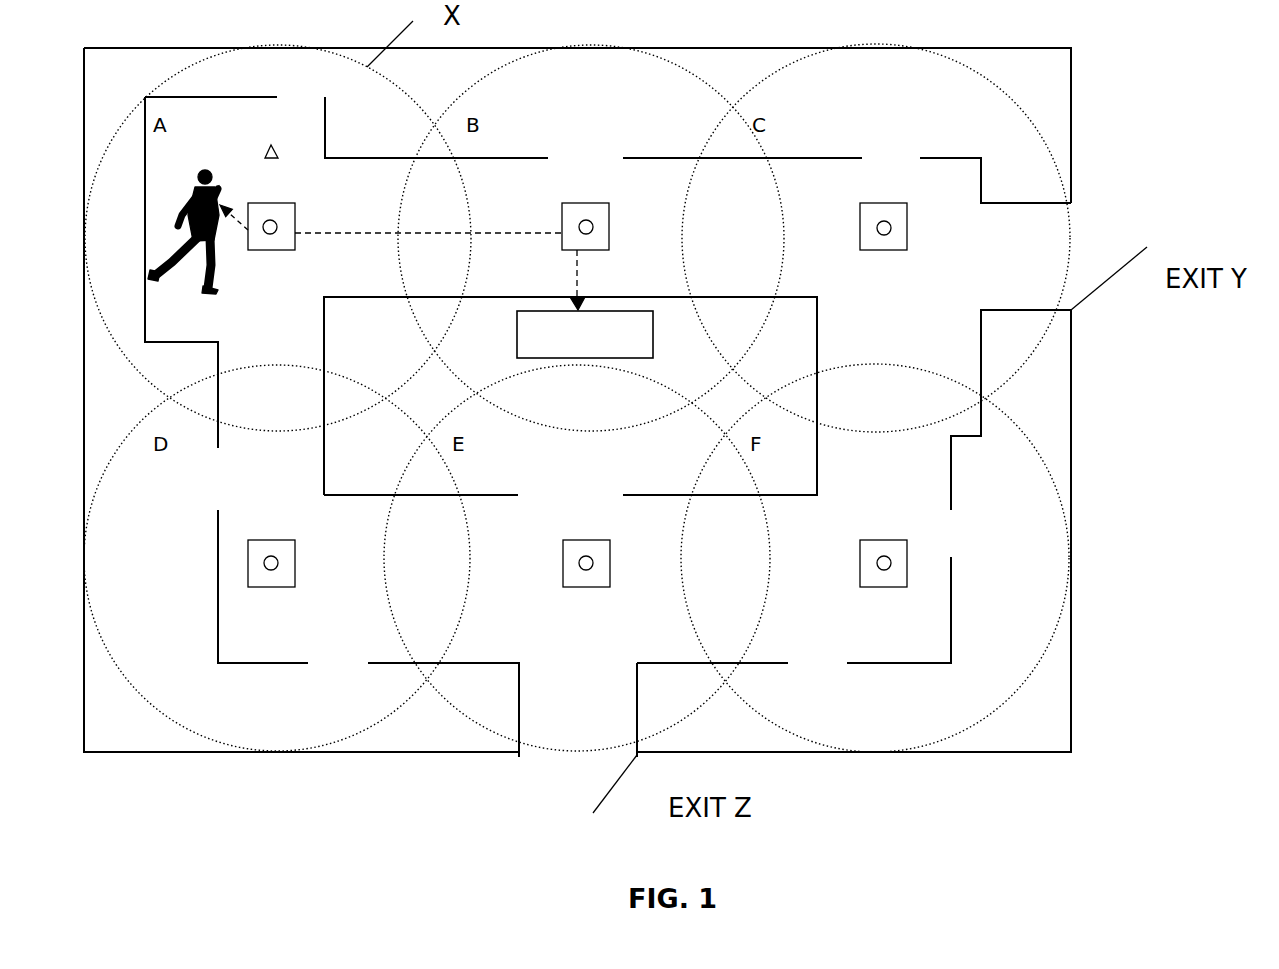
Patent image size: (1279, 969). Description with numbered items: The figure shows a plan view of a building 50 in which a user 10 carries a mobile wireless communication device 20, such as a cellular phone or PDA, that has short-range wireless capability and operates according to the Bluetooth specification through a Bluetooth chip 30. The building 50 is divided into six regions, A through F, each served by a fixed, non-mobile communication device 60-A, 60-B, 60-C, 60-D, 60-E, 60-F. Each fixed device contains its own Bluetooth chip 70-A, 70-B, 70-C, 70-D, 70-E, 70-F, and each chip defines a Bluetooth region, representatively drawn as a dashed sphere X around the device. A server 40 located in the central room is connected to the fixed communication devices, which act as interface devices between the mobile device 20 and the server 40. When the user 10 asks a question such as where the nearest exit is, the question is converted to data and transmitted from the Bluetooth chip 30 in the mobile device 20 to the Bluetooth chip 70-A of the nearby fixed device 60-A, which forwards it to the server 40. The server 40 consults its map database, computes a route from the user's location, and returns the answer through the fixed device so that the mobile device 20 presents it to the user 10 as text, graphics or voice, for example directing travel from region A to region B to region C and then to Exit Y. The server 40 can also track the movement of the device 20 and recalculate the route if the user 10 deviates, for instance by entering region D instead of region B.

The user 10 is at (183, 216).
The mobile wireless communication device 20 is at (173, 173).
The Bluetooth chip 30 is at (218, 190).
The server 40 is at (585, 334).
The building 50 is at (1072, 68).
The fixed communication device 60-A is at (295, 218).
The fixed communication device 60-B is at (609, 218).
The fixed communication device 60-C is at (907, 218).
The fixed communication device 60-D is at (295, 557).
The fixed communication device 60-E is at (609, 553).
The fixed communication device 60-F is at (907, 557).
The Bluetooth chip 70-A is at (263, 234).
The Bluetooth chip 70-B is at (592, 235).
The Bluetooth chip 70-C is at (876, 237).
The Bluetooth chip 70-D is at (263, 557).
The Bluetooth chip 70-E is at (577, 570).
The Bluetooth chip 70-F is at (877, 570).